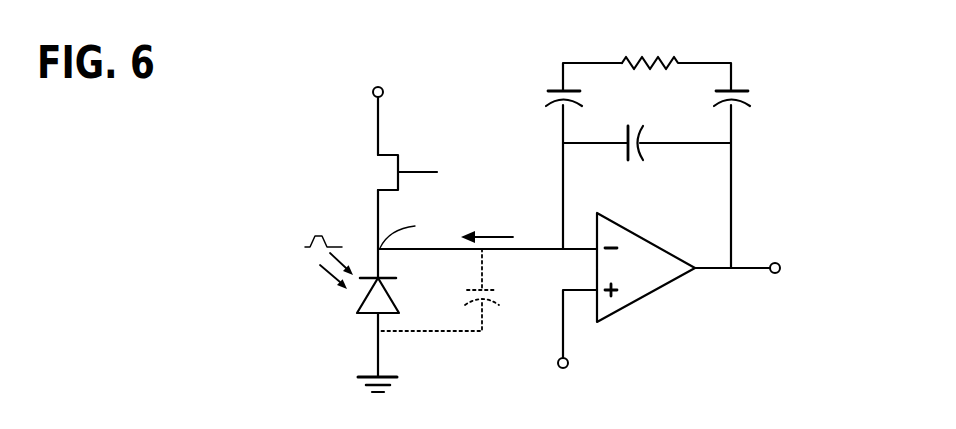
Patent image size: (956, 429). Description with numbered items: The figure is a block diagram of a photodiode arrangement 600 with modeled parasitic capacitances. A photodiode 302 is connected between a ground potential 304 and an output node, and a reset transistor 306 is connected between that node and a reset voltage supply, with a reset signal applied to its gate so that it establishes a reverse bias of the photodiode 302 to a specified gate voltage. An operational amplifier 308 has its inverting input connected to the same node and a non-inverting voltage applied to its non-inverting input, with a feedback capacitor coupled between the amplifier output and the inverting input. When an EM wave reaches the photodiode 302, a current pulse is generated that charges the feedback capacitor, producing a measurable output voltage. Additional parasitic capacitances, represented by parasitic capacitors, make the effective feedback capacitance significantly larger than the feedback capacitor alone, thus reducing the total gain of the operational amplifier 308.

The pixel readout circuit 600 is at (270, 127).
The photodiode 302 is at (323, 310).
The ground potential 304 is at (395, 376).
The reset transistor 306 is at (389, 153).
The operational amplifier 308 is at (636, 306).